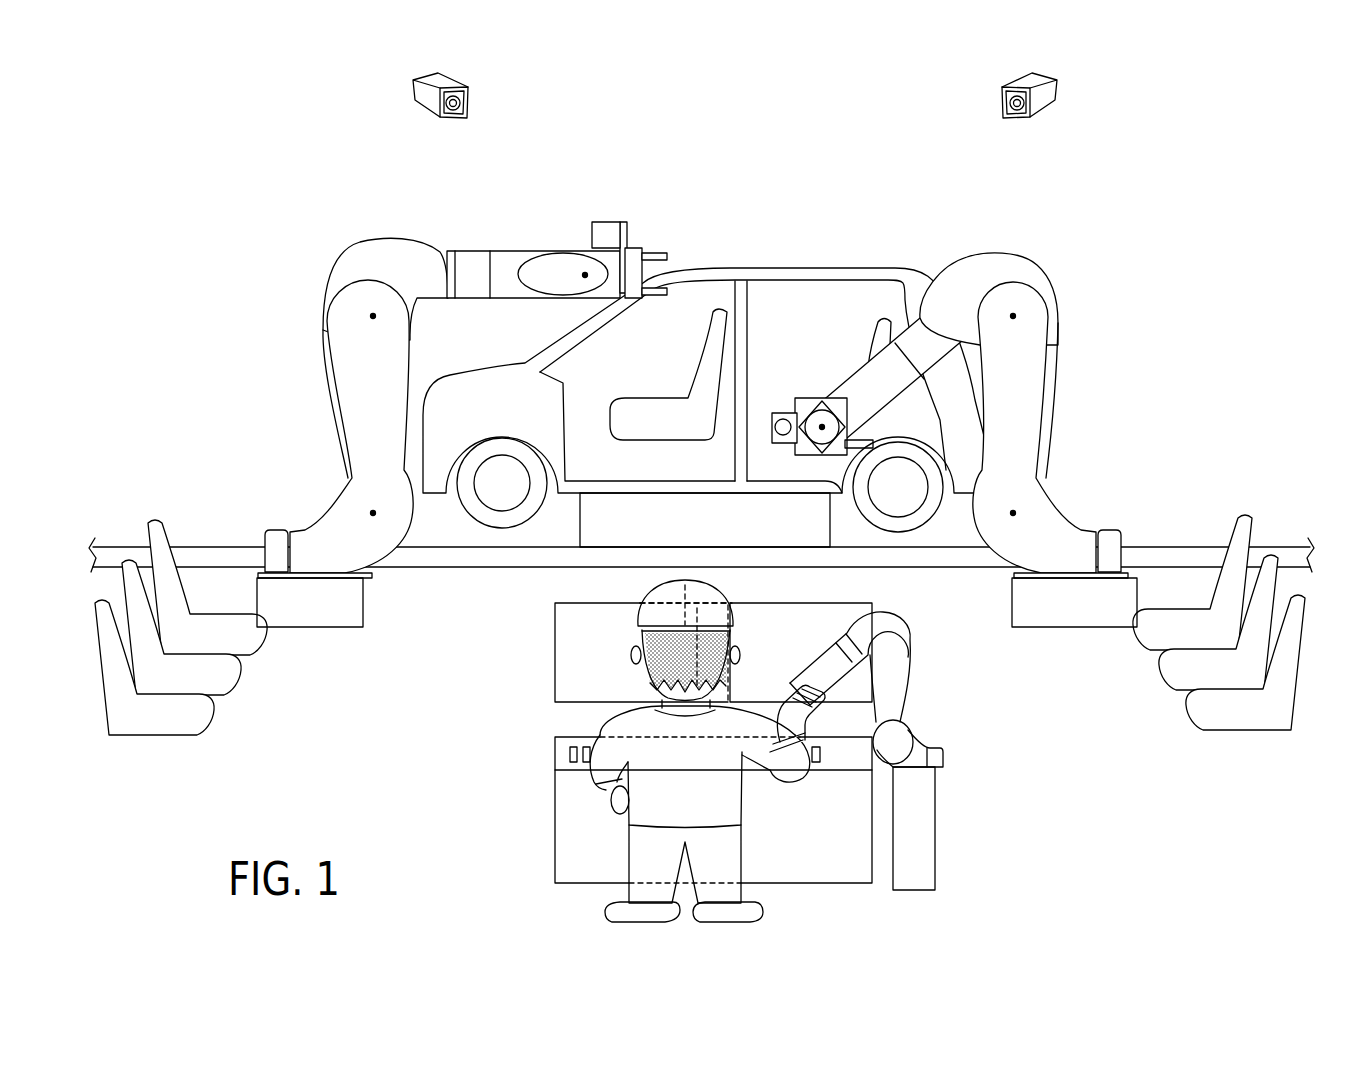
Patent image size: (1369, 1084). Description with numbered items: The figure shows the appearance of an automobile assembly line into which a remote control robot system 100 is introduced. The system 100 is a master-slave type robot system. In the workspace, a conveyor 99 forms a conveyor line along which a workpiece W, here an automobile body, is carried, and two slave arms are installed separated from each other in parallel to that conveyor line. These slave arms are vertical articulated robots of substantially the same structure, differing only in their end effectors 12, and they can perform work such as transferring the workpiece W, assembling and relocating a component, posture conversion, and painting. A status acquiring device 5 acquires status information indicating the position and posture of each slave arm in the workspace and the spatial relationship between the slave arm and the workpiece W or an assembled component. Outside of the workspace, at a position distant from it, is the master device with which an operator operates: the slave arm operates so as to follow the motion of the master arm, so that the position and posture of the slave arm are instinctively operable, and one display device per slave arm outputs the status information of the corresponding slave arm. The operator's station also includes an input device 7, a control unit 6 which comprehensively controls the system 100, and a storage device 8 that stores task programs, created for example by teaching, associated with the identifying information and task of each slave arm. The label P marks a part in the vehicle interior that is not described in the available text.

The remote control robot system 100 is at (1150, 200).
The status acquiring device 5 is at (435, 117).
The end effector 12 is at (655, 253).
The seat (part) P is at (727, 310).
The workpiece W is at (810, 265).
The conveyor 99 is at (1202, 545).
The input device 7 is at (557, 753).
The control unit 6 is at (555, 800).
The storage device 8 is at (555, 845).